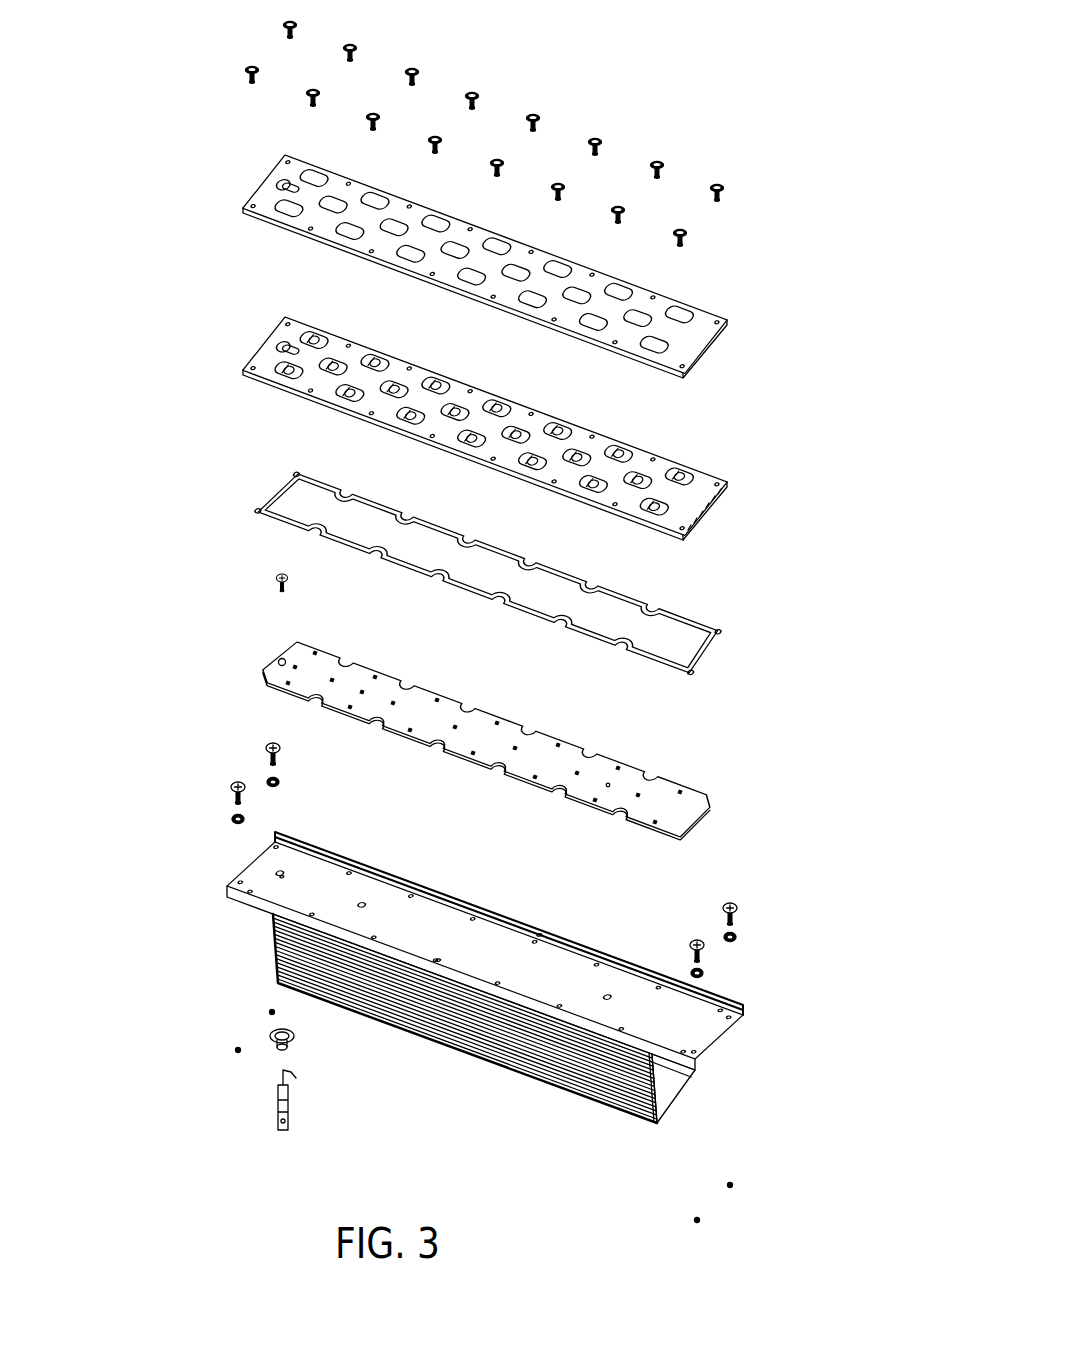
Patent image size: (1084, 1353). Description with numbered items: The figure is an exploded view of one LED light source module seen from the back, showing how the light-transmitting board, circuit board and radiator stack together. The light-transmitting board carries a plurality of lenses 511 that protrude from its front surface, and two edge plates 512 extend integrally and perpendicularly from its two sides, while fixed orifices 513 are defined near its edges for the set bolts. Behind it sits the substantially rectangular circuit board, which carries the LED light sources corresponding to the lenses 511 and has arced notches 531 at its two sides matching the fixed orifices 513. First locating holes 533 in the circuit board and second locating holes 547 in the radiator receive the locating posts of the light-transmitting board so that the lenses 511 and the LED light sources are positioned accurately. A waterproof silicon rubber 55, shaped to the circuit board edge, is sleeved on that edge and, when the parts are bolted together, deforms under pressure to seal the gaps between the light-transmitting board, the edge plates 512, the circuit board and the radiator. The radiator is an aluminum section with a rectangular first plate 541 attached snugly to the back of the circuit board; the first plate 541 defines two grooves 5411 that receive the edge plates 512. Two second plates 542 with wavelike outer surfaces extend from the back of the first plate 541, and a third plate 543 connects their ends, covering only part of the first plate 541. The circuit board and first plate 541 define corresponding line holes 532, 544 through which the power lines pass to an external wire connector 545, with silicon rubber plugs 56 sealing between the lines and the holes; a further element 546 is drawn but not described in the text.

The lenses 511 is at (680, 473).
The fixed orifices 513 is at (720, 480).
The edge plates 512 is at (684, 537).
The waterproof silicon rubber 55 is at (268, 497).
The silicon rubber plugs 56 is at (273, 580).
The line hole 532 is at (280, 659).
The arced notches 531 is at (312, 700).
The second locating holes 547 is at (363, 903).
The line hole 544 is at (280, 872).
The first locating holes 533 is at (545, 930).
The first plate 541 is at (508, 988).
The grooves 5411 is at (730, 1002).
The cable grommet 546 is at (275, 1032).
The external wire connector 545 is at (268, 1107).
The second plates 542 is at (612, 1088).
The third plate 543 is at (672, 1097).